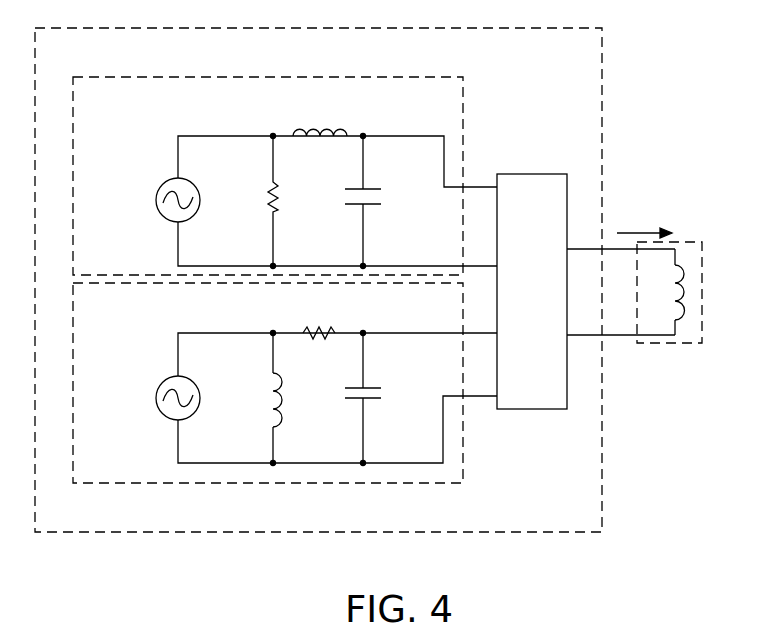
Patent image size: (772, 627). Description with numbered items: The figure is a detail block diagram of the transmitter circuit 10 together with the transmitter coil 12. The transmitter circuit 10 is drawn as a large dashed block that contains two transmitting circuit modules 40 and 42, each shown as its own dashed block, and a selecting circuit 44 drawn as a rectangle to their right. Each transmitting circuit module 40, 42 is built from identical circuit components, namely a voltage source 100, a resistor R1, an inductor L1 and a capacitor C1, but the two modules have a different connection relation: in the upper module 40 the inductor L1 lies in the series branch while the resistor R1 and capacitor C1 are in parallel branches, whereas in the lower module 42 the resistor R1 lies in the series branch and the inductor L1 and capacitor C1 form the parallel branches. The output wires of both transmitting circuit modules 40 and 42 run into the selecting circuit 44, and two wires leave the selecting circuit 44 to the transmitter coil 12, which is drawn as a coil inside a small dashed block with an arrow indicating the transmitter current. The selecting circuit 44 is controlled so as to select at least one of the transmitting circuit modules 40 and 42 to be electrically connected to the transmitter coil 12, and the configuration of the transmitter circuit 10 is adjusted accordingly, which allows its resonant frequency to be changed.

The transmitter circuit 10 is at (88, 60).
The transmitting circuit module 40 is at (127, 112).
The transmitting circuit module 42 is at (126, 318).
The voltage source 100 is at (161, 188).
The selecting circuit 44 is at (545, 174).
The transmitter coil 12 is at (703, 260).
The inductor L1 is at (292, 280).
The resistor R1 is at (301, 237).
The capacitor C1 is at (381, 299).